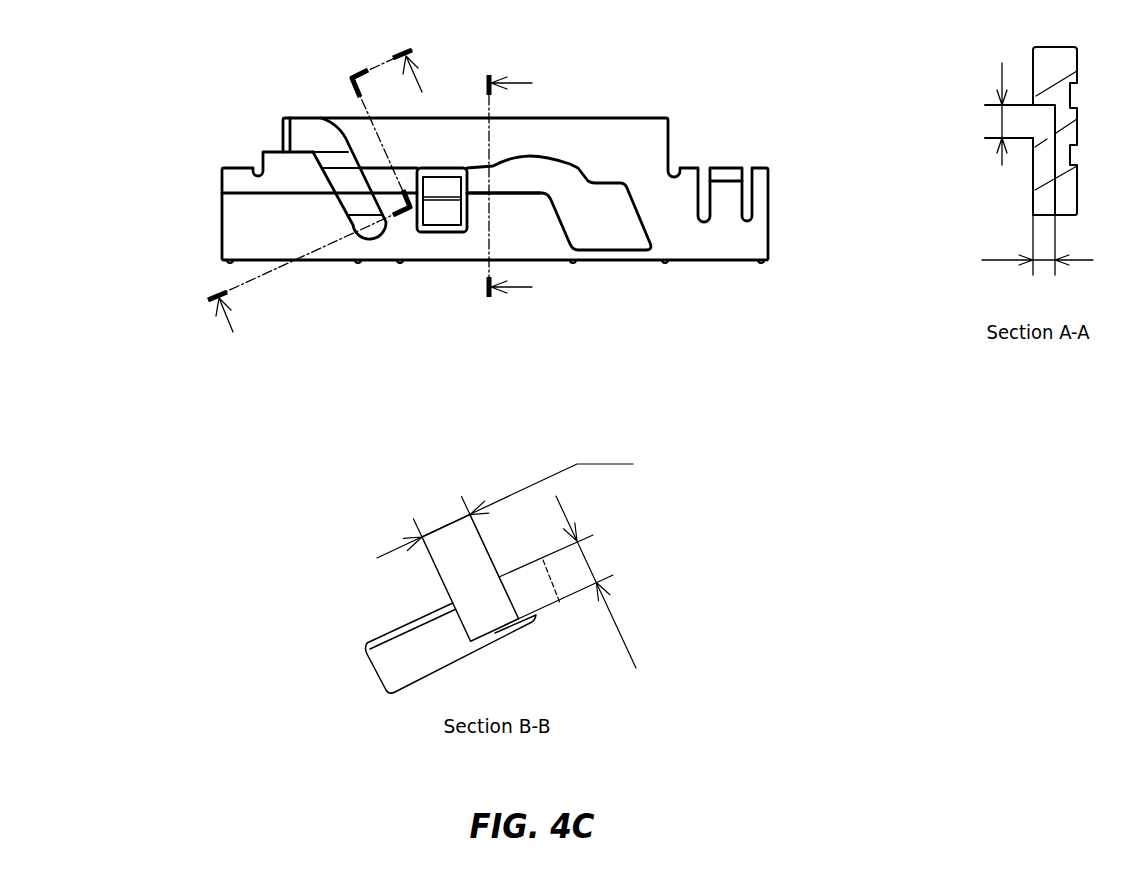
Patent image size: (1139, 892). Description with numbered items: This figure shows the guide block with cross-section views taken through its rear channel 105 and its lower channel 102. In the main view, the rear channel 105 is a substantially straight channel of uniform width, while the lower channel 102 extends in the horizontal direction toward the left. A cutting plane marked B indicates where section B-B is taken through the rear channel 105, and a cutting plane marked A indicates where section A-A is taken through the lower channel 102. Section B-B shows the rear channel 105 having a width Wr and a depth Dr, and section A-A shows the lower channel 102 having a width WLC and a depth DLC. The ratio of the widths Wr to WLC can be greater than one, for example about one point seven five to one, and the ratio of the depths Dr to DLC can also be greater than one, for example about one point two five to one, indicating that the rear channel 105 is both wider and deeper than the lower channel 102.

The rear channel 105 is at (338, 202).
The lower channel 102 is at (508, 193).
The section A- A is at (511, 184).
The section B- B is at (320, 195).
The width of the lower channel WLC is at (1002, 167).
The depth of the lower channel DLC is at (1055, 262).
The width of the rear channel Wr is at (521, 496).
The depth of the rear channel Dr is at (603, 598).